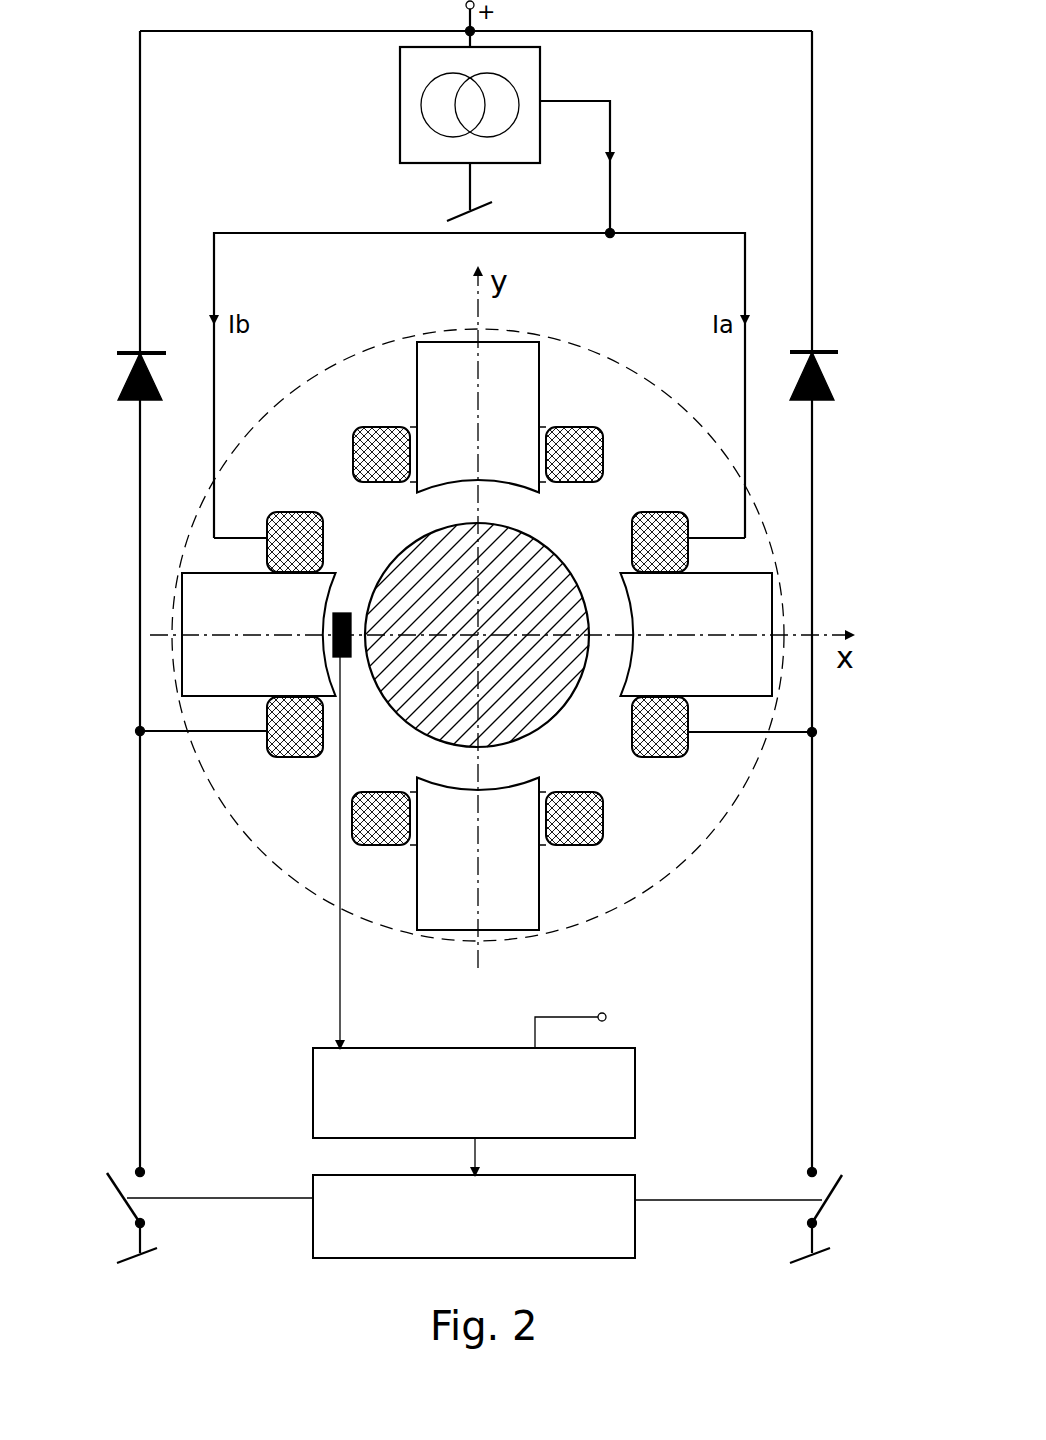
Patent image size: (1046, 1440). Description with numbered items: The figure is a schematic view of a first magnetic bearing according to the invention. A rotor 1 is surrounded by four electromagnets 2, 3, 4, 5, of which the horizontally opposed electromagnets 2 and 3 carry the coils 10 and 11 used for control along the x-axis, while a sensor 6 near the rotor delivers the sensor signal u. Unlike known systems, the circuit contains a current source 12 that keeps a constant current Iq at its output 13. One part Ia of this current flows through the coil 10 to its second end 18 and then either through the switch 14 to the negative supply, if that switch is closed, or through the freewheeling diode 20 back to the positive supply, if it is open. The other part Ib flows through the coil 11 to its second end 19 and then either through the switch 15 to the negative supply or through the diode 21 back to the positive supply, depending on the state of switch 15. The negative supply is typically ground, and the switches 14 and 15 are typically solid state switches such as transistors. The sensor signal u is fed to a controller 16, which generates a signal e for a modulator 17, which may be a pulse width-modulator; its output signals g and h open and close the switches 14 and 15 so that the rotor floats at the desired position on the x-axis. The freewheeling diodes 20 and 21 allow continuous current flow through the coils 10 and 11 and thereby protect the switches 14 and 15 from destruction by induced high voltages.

The rotor 1 is at (477, 635).
The electromagnet 2 is at (697, 665).
The electromagnet 3 is at (259, 665).
The electromagnet 4 is at (478, 417).
The electromagnet 5 is at (477, 854).
The position sensor 6 is at (347, 660).
The coil 10 is at (672, 522).
The coil 11 is at (296, 528).
The current source 12 is at (415, 80).
The output 13 is at (548, 87).
The switch 14 is at (827, 1197).
The switch 15 is at (121, 1197).
The controller 16 is at (325, 1108).
The modulator 17 is at (325, 1190).
The second end 18 is at (815, 735).
The second end 19 is at (138, 735).
The freewheeling diode 20 is at (822, 370).
The freewheeling diode 21 is at (128, 373).